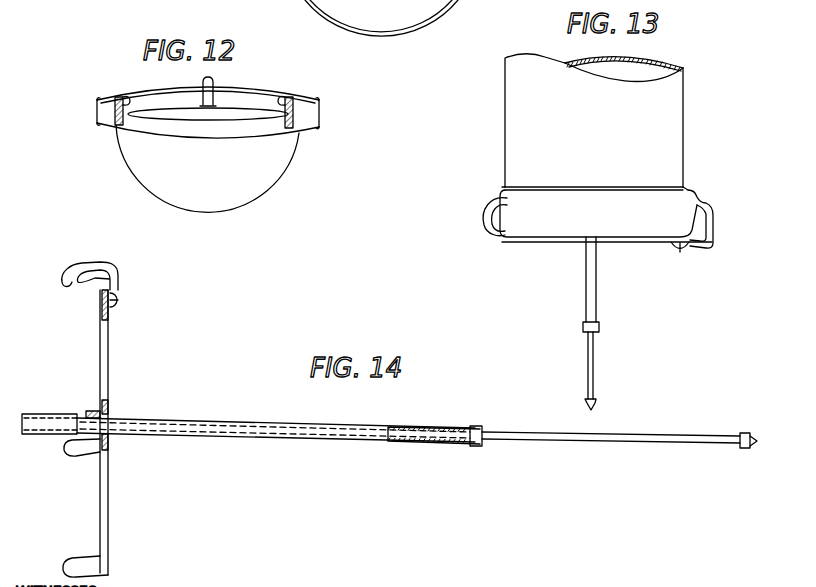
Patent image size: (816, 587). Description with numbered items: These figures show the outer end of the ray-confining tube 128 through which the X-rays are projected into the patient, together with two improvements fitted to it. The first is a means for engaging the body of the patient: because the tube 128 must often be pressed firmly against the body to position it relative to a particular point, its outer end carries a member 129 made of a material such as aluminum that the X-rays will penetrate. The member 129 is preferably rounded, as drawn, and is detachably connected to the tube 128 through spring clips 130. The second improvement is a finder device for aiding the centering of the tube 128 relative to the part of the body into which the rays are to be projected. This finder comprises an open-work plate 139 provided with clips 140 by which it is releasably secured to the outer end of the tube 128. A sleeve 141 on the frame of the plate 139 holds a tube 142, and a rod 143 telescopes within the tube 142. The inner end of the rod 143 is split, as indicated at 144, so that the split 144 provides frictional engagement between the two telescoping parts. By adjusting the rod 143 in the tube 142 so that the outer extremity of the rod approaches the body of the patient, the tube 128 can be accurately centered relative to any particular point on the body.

In FIG. 13, the ray-confining tube 128 is at (672, 123).
In FIG. 12, the rounded member 129 is at (267, 170).
In FIG. 12, the spring clips 130 is at (128, 100).
In FIG. 13, the open-work plate 139 is at (565, 238).
In FIG. 14, the open-work plate 139 is at (106, 403).
In FIG. 13, the clips 140 is at (500, 207).
In FIG. 14, the clips 140 is at (92, 270).
In FIG. 14, the sleeve 141 is at (88, 413).
In FIG. 13, the tube 142 is at (596, 313).
In FIG. 14, the tube 142 is at (178, 432).
In FIG. 13, the rod 143 is at (593, 368).
In FIG. 14, the rod 143 is at (525, 437).
In FIG. 14, the split inner end 144 is at (440, 446).